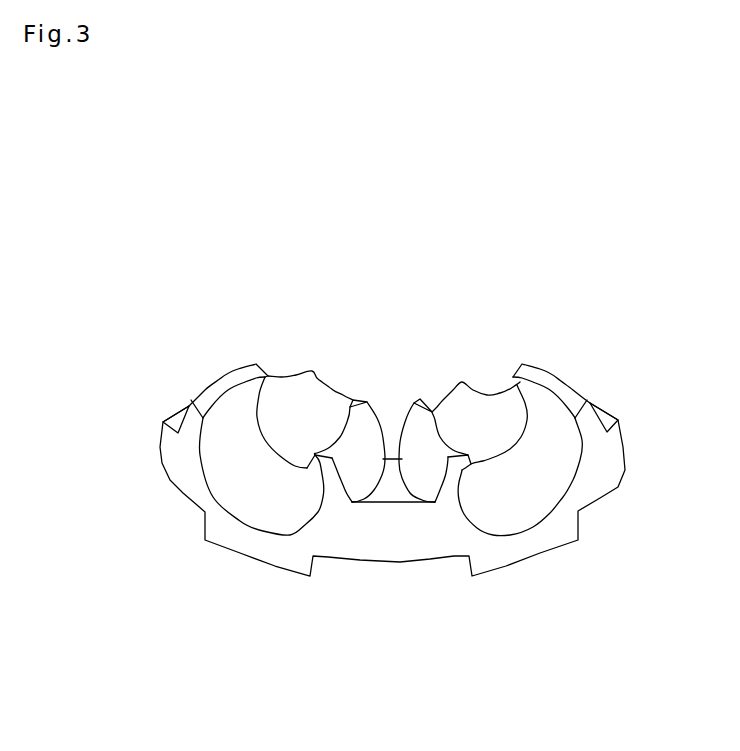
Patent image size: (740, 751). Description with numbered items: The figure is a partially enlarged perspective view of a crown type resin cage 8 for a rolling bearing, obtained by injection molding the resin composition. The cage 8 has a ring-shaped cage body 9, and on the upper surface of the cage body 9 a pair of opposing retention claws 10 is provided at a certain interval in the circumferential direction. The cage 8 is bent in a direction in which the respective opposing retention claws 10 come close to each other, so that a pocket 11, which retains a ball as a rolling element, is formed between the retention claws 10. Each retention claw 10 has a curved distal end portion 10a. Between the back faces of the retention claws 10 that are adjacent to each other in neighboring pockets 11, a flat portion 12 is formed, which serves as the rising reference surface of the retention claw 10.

The cage 8 is at (435, 335).
The cage body 9 is at (162, 460).
The retention claws 10 is at (312, 371).
The curved distal end portion 10a is at (316, 462).
The pocket 11 is at (233, 497).
The flat portion 12 is at (396, 502).